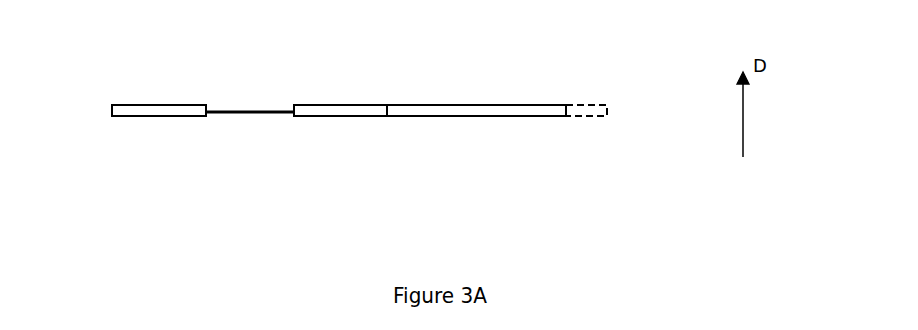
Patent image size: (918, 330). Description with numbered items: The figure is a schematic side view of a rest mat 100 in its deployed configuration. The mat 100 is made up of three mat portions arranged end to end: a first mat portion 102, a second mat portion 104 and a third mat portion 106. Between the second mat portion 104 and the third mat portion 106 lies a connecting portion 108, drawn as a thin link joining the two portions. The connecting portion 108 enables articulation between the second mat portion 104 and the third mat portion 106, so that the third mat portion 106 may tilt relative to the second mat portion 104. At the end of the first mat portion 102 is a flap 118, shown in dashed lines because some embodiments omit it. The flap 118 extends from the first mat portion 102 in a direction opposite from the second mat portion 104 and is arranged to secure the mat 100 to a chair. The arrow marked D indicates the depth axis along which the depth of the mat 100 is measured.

The mat 100 is at (390, 76).
The first mat portion 102 is at (487, 110).
The second mat portion 104 is at (353, 111).
The third mat portion 106 is at (139, 108).
The connecting portion 108 is at (237, 111).
The flap 118 is at (593, 104).